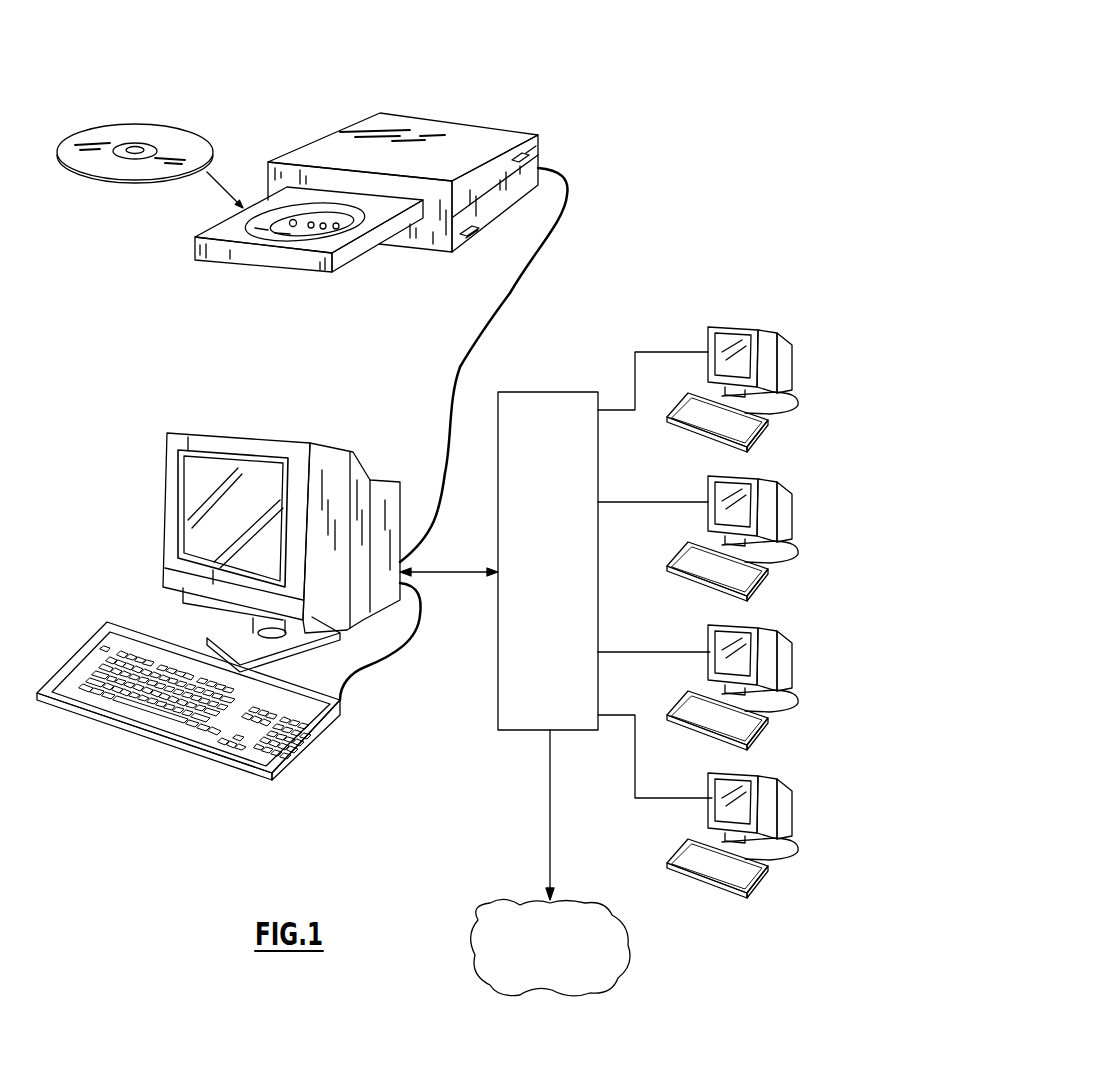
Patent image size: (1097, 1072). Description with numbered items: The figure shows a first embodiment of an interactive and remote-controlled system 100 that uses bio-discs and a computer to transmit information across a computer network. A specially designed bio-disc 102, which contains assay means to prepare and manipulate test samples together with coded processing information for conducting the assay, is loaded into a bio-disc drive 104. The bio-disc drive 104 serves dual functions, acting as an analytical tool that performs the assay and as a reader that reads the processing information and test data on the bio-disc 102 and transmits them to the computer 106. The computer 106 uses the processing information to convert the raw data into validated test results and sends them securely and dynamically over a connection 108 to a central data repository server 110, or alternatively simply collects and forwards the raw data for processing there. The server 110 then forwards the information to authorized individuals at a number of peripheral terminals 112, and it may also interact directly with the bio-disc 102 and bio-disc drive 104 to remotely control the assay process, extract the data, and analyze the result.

The interactive system 100 is at (676, 66).
The bio-disc 102 is at (176, 127).
The bio-disc drive 104 is at (460, 123).
The computer 106 is at (163, 517).
The connection 108 is at (440, 575).
The server 110 is at (540, 390).
The peripheral terminals 112 is at (745, 327).